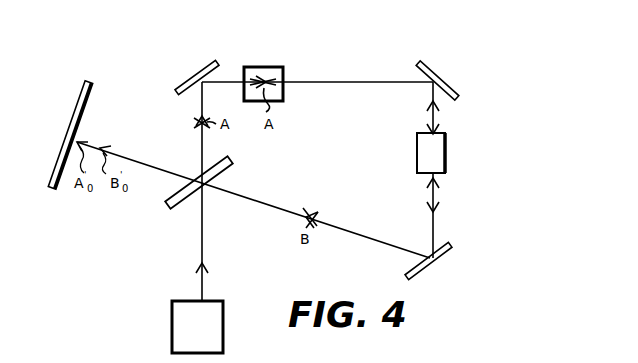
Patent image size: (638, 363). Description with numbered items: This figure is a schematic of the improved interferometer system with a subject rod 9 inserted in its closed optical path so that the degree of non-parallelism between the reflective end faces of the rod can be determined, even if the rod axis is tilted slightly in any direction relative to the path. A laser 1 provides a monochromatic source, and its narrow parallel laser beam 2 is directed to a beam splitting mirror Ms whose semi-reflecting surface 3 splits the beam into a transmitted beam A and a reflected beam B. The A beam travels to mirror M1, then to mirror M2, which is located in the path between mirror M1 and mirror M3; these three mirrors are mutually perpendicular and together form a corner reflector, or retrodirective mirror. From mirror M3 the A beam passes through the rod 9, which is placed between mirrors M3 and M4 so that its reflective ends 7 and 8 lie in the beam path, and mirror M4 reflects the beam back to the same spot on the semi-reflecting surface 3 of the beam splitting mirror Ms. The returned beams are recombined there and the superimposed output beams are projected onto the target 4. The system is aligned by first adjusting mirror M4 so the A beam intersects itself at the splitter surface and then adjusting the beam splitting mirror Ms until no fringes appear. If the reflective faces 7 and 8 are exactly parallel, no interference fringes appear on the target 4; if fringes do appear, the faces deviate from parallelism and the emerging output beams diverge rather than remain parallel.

The laser 1 is at (225, 308).
The laser beam 2 is at (203, 240).
The semi-reflecting surface 3 is at (175, 206).
The target 4 is at (53, 190).
The reflective end 7 is at (436, 132).
The reflective end 8 is at (440, 175).
The subject rod 9 is at (446, 152).
The mirror M1 is at (200, 71).
The mirror M2 is at (254, 66).
The mirror M3 is at (452, 79).
The mirror M4 is at (446, 262).
The beam splitting mirror Ms is at (208, 184).